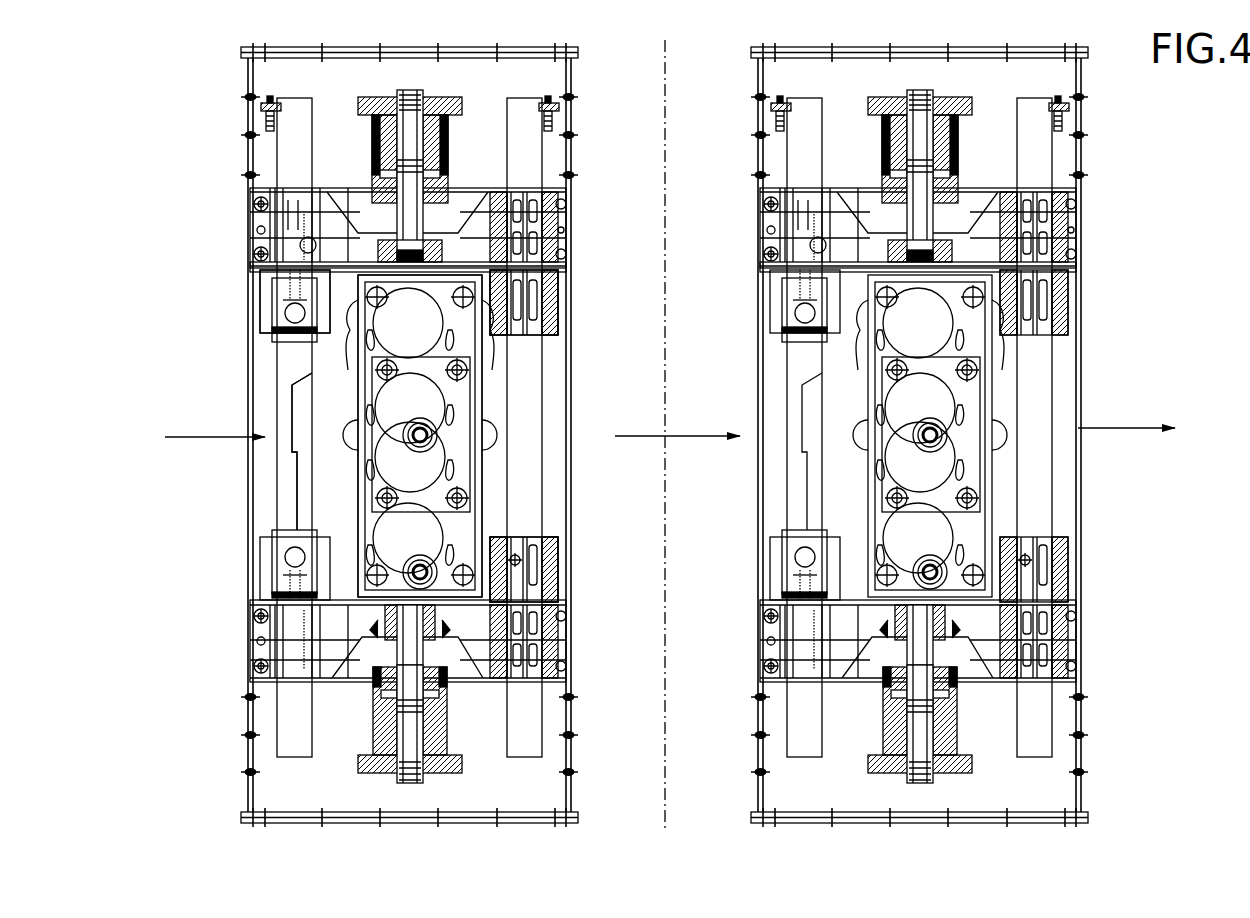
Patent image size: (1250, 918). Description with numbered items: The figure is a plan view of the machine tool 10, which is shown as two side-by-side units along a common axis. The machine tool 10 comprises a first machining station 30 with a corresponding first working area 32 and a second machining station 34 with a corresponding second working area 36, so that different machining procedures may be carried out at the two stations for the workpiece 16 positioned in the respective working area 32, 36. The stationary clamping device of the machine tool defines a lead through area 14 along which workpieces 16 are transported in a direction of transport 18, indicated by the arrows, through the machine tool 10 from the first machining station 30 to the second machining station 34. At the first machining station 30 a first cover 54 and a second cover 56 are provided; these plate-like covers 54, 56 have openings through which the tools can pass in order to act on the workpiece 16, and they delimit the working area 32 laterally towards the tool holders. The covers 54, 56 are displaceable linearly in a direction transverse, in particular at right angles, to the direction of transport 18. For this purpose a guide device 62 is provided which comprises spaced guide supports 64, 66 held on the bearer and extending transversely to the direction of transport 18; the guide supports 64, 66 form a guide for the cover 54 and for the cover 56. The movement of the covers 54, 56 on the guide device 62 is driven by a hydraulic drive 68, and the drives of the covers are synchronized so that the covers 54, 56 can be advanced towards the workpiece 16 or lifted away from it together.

The machine tool 10 is at (212, 90).
The lead through area 14 is at (711, 330).
The workpiece 16 is at (360, 528).
The direction of transport 18 is at (676, 436).
The first machining station 30 is at (410, 865).
The first working area 32 is at (338, 458).
The second machining station 34 is at (930, 865).
The second working area 36 is at (495, 497).
The first cover 54 is at (476, 284).
The second cover 56 is at (560, 583).
The guide device 62 is at (282, 302).
The guide support 64 is at (285, 368).
The guide support 66 is at (530, 387).
The hydraulic drive 68 is at (382, 735).